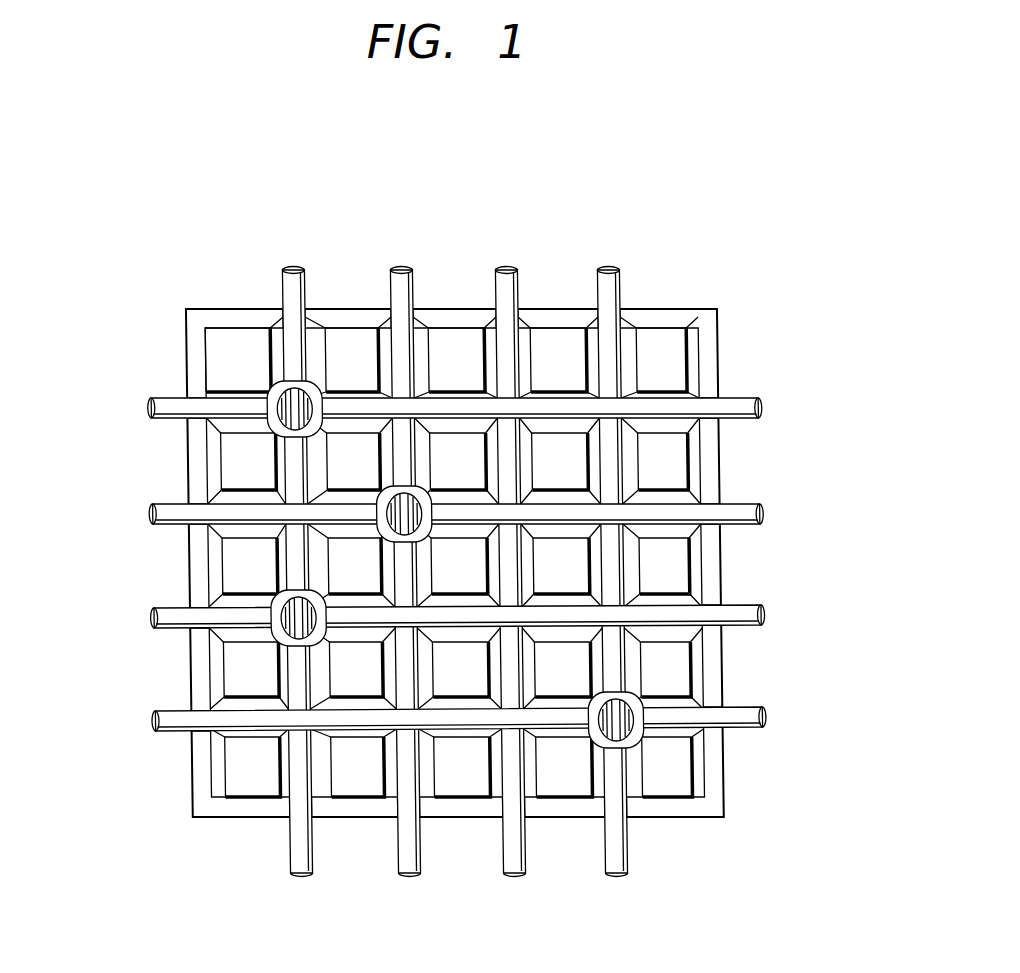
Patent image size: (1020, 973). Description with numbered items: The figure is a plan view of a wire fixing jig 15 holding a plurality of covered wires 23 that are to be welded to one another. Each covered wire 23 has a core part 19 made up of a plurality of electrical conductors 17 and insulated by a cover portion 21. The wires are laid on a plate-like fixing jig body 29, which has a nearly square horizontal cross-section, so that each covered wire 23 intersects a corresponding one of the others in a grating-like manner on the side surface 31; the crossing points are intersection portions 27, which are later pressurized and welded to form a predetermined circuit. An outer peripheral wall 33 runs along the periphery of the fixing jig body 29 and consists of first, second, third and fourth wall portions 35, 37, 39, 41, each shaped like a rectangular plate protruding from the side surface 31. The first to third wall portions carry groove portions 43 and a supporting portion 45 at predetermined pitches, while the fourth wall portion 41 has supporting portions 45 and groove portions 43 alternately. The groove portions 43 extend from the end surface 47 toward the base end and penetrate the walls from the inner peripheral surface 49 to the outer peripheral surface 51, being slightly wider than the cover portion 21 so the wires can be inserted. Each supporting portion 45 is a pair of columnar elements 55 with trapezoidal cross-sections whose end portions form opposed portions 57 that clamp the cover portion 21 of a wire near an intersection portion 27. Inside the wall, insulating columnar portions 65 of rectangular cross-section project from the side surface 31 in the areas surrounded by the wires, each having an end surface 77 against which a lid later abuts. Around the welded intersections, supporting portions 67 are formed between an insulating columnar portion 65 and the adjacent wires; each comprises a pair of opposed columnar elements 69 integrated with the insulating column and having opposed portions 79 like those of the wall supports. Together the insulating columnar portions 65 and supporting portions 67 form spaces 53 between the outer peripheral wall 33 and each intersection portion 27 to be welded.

The wire fixing jig 15 is at (173, 287).
The electrical conductors 17 is at (205, 340).
The core part 19 is at (310, 385).
The cover portion 21 is at (283, 290).
The covered wires 23 is at (308, 280).
The intersection portions 27 is at (262, 600).
The fixing jig body 29 is at (355, 810).
The side surface 31 is at (425, 815).
The outer peripheral wall 33 is at (232, 820).
The first wall portion 35 is at (555, 810).
The second wall portion 37 is at (710, 440).
The third wall portion 39 is at (648, 315).
The fourth wall portion 41 is at (197, 680).
The groove portions 43 is at (428, 320).
The supporting portions 45 is at (255, 305).
The end surface 47 is at (677, 315).
The inner peripheral surface 49 is at (213, 435).
The outer peripheral surface 51 is at (195, 562).
The spaces 53 is at (263, 365).
The columnar elements 55 is at (723, 698).
The opposed portions 57 is at (718, 662).
The insulating columnar portions 65 is at (355, 463).
The supporting portions 67 is at (462, 522).
The columnar elements 69 is at (507, 493).
The end surface 77 is at (353, 443).
The opposed portions 79 is at (472, 517).